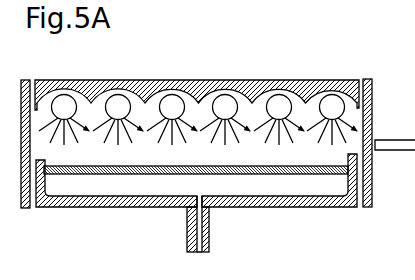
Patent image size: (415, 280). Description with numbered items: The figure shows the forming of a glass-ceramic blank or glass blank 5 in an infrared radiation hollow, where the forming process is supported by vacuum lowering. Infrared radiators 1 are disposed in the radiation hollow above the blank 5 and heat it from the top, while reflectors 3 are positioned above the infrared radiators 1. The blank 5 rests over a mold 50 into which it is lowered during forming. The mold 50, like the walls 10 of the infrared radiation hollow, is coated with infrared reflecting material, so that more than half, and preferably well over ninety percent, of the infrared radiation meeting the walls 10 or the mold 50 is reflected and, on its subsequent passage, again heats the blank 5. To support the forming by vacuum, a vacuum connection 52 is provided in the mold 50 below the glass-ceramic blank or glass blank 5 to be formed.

The infrared radiators 1 is at (123, 107).
The reflectors 3 is at (198, 80).
The glass-ceramic blank or glass blank 5 is at (328, 175).
The walls 10 is at (28, 80).
The mold 50 is at (265, 206).
The vacuum connection 52 is at (210, 243).